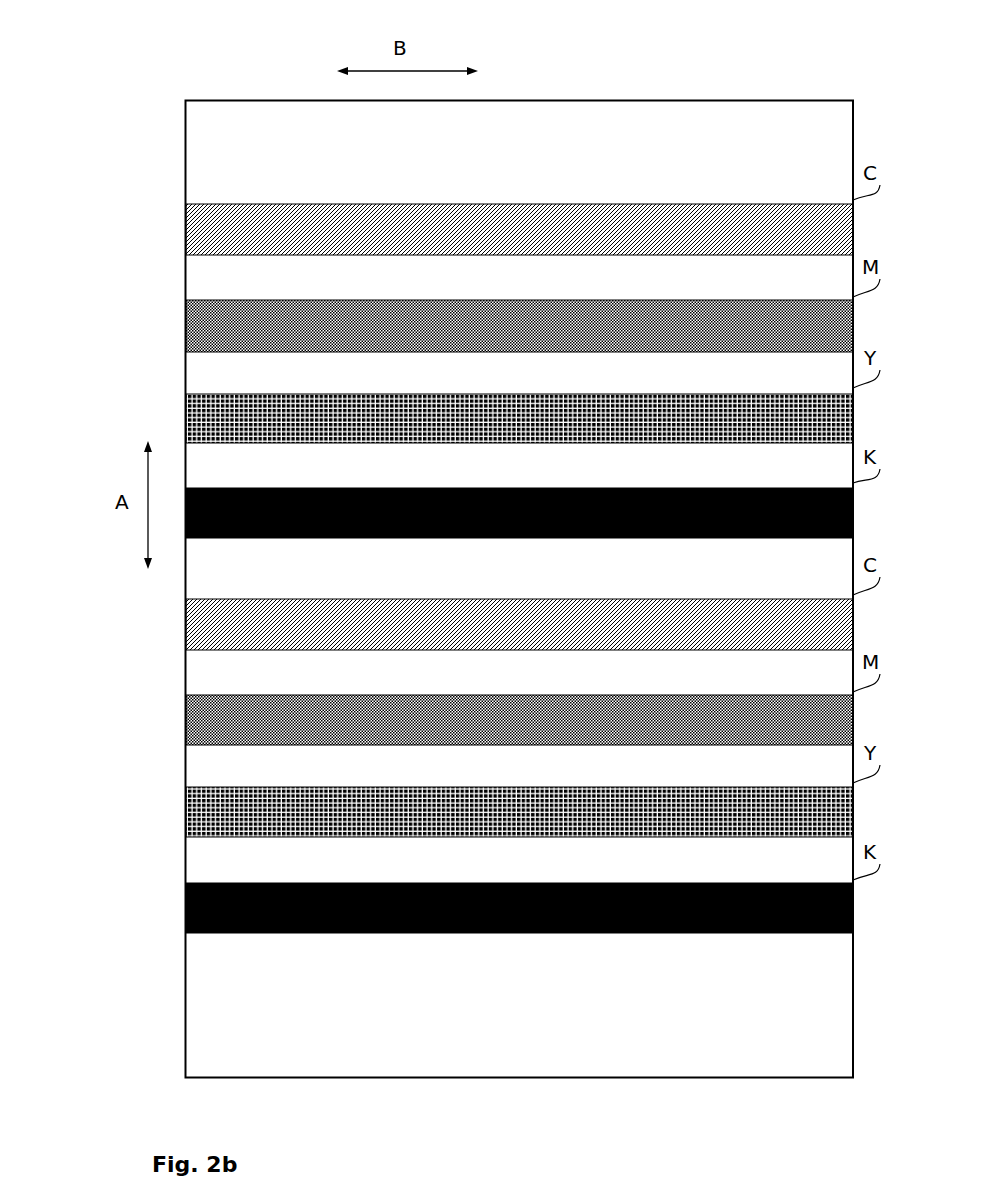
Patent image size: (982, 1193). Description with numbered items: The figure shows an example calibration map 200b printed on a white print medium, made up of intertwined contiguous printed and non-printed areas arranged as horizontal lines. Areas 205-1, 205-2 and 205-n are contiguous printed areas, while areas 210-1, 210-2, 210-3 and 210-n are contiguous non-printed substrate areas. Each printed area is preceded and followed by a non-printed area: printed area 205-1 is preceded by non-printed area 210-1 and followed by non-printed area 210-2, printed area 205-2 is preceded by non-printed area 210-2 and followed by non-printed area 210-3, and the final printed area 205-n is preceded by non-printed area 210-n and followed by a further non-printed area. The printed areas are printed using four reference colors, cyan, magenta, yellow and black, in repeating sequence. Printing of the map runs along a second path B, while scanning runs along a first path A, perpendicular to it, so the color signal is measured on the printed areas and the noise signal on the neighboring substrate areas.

The calibration map 200b is at (181, 84).
The non-printed area 210-1 is at (195, 172).
The printed area 205-1 is at (186, 218).
The non-printed area 210-2 is at (195, 276).
The printed area 205-2 is at (186, 320).
The non-printed area 210-3 is at (195, 379).
The non-printed area 210-n is at (190, 861).
The printed area 205-n is at (186, 902).